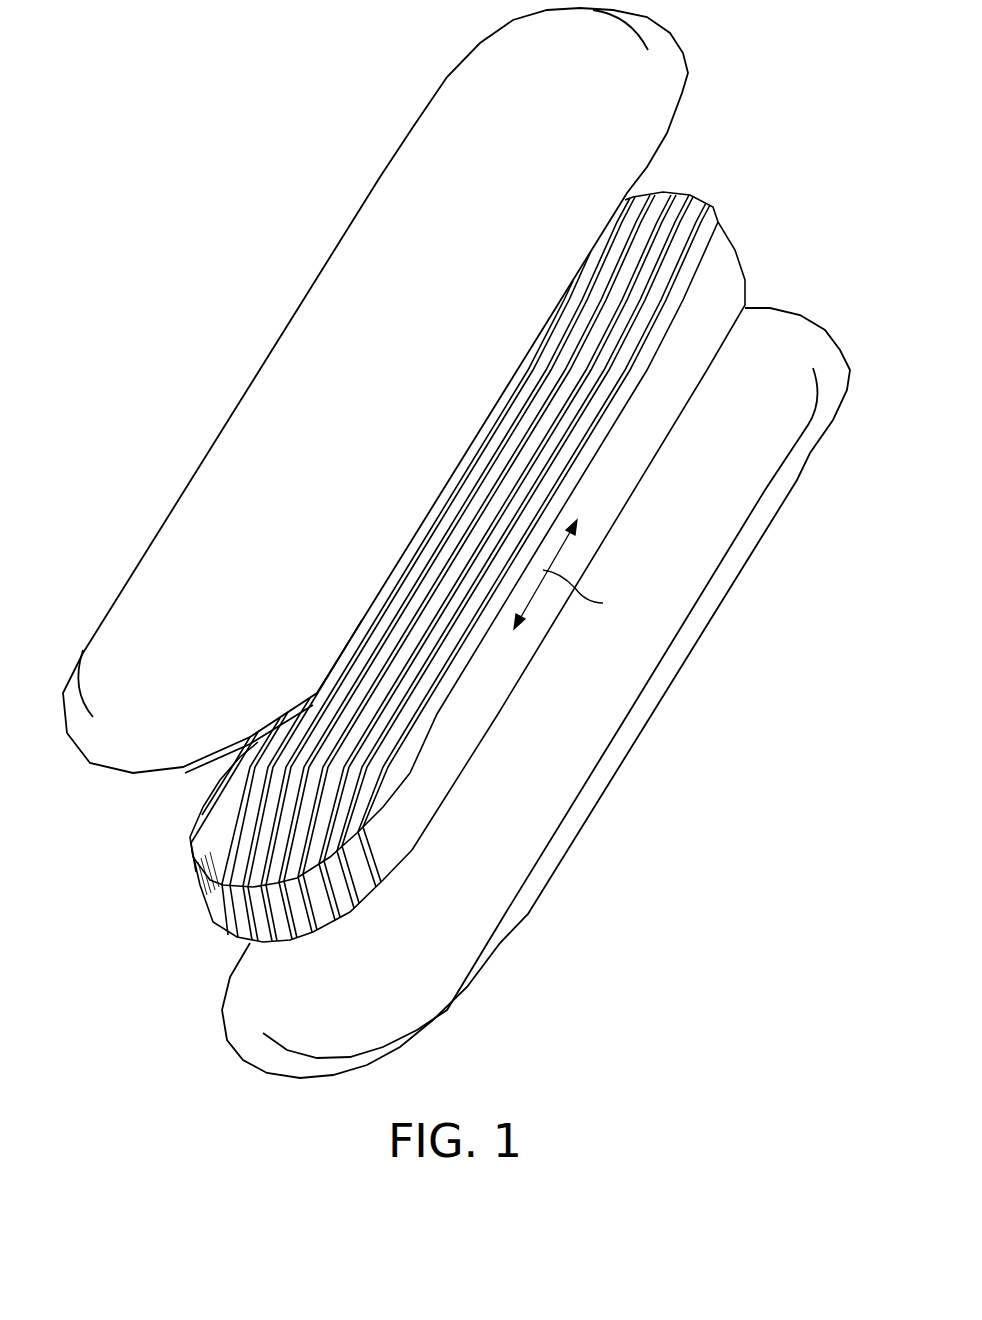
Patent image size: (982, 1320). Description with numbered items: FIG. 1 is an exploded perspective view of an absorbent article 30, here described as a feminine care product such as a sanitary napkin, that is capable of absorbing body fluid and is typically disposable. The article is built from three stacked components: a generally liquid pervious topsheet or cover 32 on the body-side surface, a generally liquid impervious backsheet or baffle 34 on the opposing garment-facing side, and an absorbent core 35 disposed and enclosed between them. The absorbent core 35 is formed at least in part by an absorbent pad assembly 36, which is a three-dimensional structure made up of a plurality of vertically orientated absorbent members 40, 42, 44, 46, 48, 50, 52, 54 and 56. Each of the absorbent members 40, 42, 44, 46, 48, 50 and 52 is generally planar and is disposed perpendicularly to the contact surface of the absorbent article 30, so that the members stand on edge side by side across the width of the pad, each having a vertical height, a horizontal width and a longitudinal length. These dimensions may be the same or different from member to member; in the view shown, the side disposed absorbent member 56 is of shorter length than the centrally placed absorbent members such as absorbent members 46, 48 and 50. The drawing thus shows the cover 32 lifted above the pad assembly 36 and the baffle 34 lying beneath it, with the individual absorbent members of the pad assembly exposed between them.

The absorbent article 30 is at (456, 560).
The topsheet or cover 32 is at (148, 625).
The backsheet or baffle 34 is at (560, 763).
The absorbent core 35 is at (417, 616).
The absorbent pad assembly 36 is at (172, 866).
The absorbent member 40 is at (203, 810).
The absorbent member 42 is at (200, 872).
The absorbent member 44 is at (216, 905).
The absorbent member 46 is at (230, 900).
The absorbent member 48 is at (253, 945).
The absorbent member 50 is at (280, 920).
The absorbent member 52 is at (302, 925).
The absorbent member 54 is at (324, 903).
The side disposed absorbent member 56 is at (390, 838).